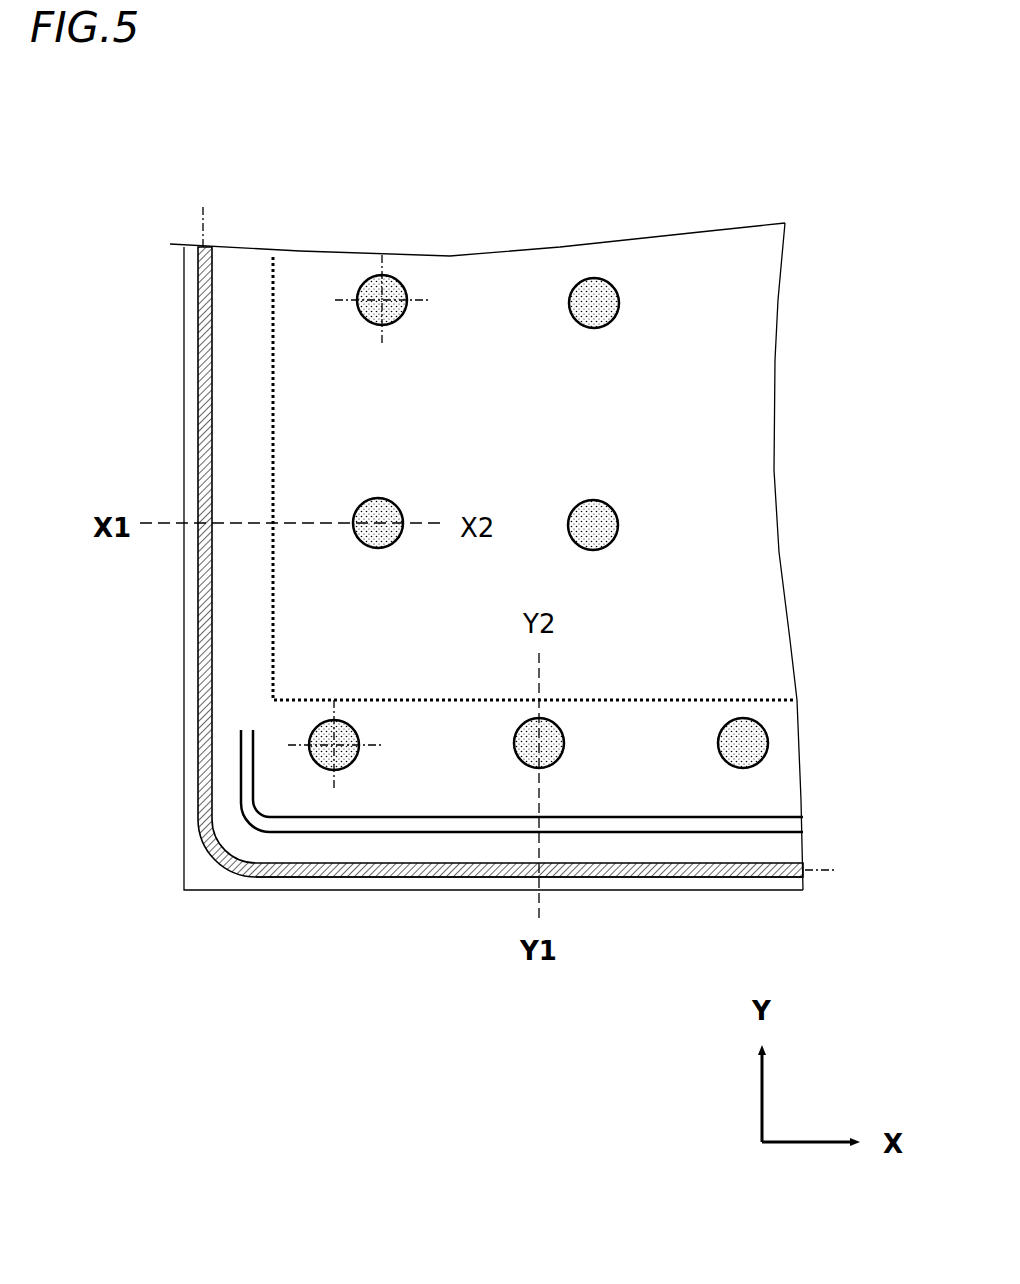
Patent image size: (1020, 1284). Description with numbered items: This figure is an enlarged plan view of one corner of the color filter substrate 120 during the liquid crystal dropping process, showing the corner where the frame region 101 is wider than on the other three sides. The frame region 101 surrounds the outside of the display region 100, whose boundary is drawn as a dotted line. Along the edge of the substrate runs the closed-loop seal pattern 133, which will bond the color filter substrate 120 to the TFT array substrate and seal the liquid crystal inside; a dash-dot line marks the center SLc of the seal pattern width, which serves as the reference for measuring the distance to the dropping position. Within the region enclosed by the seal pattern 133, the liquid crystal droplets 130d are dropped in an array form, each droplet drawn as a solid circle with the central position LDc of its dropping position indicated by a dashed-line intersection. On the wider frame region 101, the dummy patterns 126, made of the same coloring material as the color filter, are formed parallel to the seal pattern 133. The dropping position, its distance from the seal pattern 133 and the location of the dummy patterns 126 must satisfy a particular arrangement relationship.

The display region 100 is at (270, 392).
The frame region 101 is at (232, 362).
The color filter substrate 120 is at (182, 615).
The dummy patterns 126 is at (435, 818).
The liquid crystal droplets 130d is at (548, 758).
The seal pattern 133 is at (260, 877).
The central position of the dropping position LDc is at (378, 297).
The center of the seal pattern width SLc is at (535, 529).